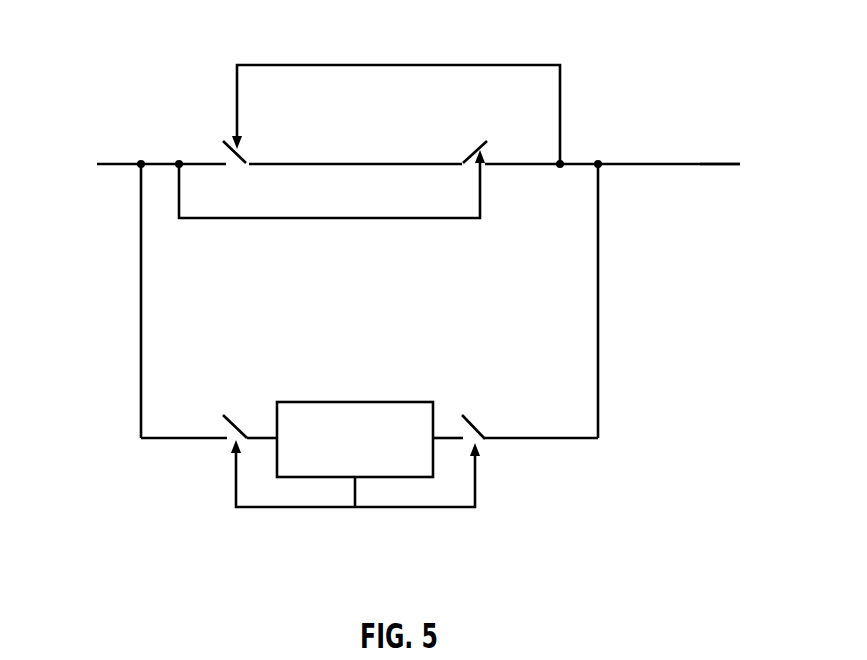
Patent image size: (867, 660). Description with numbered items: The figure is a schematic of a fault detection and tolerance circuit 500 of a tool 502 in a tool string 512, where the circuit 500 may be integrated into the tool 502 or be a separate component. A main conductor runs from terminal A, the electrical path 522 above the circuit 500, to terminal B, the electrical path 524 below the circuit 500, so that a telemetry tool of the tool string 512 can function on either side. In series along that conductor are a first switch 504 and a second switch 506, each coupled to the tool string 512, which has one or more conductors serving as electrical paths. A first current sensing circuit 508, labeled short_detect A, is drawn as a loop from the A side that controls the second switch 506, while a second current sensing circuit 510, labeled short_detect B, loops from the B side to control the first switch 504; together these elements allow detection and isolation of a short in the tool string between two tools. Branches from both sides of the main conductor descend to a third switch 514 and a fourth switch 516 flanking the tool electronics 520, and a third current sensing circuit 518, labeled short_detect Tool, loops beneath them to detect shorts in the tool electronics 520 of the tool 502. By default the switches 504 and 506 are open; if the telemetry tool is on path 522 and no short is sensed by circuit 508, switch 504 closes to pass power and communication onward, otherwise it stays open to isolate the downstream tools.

The fault detection and tolerance circuit 500 is at (122, 27).
The tool 502 is at (709, 63).
The first switch 504 is at (247, 144).
The second switch 506 is at (462, 143).
The first current sensing circuit 508 is at (453, 218).
The second current sensing circuit 510 is at (560, 83).
The tool string 512 is at (672, 165).
The third switch 514 is at (194, 477).
The fourth switch 516 is at (515, 477).
The third current sensing circuit 518 is at (420, 562).
The tool electronics 520 is at (370, 402).
The electrical path 522 is at (118, 164).
The electrical path 524 is at (707, 163).